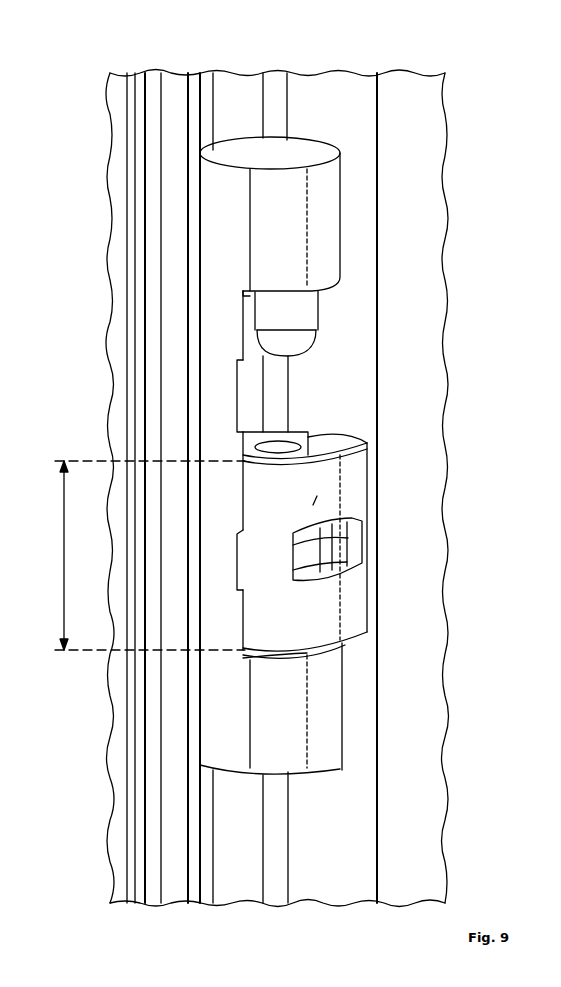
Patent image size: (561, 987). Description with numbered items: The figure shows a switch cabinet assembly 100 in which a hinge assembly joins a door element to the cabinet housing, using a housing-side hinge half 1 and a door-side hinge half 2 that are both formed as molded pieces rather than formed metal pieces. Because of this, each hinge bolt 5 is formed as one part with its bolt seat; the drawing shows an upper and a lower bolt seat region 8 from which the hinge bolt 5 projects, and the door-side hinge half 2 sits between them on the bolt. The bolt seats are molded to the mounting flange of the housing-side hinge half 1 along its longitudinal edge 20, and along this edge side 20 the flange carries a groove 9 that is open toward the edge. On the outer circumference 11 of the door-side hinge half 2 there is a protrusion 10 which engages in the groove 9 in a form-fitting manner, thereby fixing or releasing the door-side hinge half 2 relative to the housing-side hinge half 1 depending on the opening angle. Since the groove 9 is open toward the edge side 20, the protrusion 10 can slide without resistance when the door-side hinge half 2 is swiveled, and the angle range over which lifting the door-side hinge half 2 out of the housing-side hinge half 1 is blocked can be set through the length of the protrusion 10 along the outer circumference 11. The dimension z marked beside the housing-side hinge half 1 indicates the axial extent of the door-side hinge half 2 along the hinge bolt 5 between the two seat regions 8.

The switch cabinet 100 is at (475, 67).
The housing-side hinge half 1 is at (217, 233).
The cylindrical body 8 is at (323, 207).
The hinge bolt 5 is at (322, 312).
The longitudinal edge 20 is at (243, 333).
The groove 9 is at (237, 390).
The door-side hinge half 2 is at (355, 470).
The outer circumference 11 is at (317, 496).
The protrusion 10 is at (350, 572).
The distance z is at (64, 557).